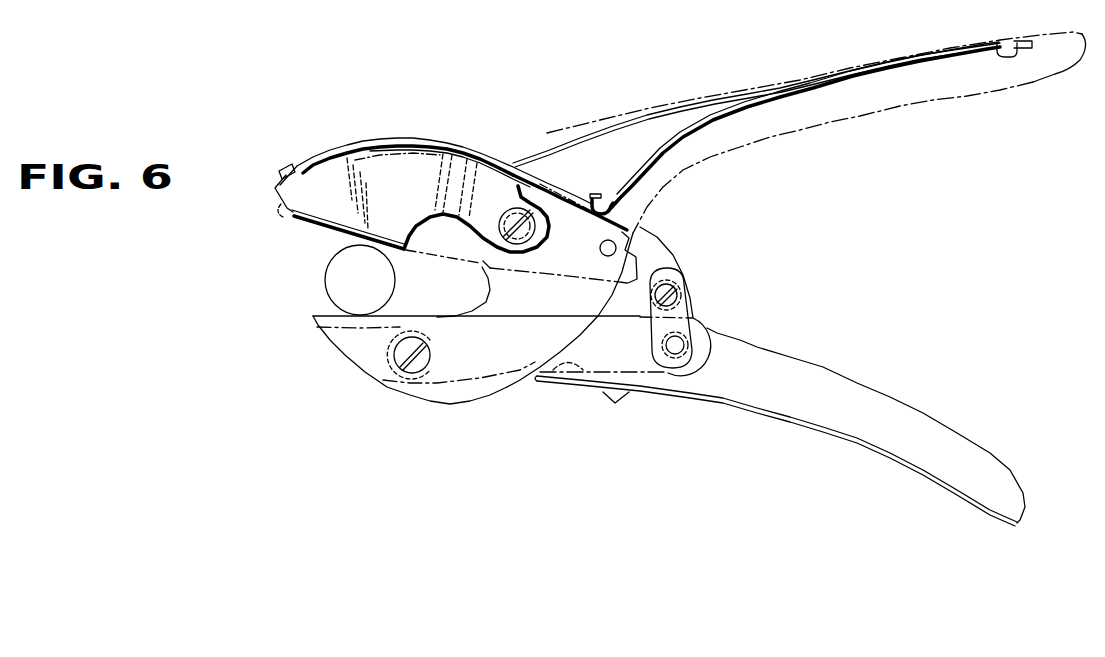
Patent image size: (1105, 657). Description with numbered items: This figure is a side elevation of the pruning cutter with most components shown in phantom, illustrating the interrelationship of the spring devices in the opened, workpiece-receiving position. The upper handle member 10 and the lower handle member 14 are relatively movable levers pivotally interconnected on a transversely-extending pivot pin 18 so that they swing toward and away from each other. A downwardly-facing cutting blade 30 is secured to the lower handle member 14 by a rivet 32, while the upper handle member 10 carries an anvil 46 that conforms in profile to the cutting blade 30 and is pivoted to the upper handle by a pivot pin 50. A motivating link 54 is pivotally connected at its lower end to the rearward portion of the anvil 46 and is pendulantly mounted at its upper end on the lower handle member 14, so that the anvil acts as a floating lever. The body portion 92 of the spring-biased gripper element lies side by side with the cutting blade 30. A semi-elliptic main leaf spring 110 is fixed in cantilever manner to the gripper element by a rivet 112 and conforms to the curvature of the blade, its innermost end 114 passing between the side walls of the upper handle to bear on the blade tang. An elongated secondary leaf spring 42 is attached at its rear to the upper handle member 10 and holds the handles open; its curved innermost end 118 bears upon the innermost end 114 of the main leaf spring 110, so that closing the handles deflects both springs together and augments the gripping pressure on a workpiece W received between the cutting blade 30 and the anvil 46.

The upper handle member 10 is at (872, 121).
The lower handle member 14 is at (893, 397).
The pivot pin 18 is at (543, 245).
The cutting blade 30 is at (454, 240).
The rivet 32 is at (618, 243).
The leaf spring 42 is at (780, 94).
The anvil 46 is at (372, 348).
The pivot pin 50 is at (431, 355).
The motivating link 54 is at (690, 310).
The body portion 92 is at (403, 197).
The main leaf spring 110 is at (393, 138).
The rivet 112 is at (283, 168).
The innermost end 114 is at (599, 220).
The curved innermost end 118 is at (594, 193).
The workpiece W is at (323, 277).